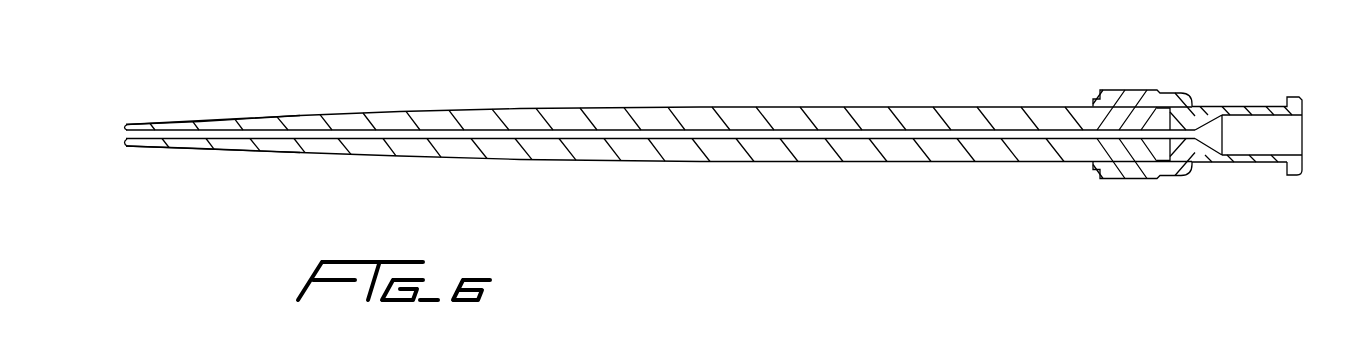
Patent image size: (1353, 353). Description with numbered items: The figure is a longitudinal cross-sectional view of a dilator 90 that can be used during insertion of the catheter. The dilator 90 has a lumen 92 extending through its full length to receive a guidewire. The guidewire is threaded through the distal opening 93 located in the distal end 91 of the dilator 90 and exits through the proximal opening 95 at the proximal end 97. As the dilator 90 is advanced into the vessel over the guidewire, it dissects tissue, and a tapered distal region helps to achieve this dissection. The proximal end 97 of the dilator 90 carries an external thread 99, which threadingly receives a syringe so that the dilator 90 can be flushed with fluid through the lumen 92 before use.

The dilator 90 is at (824, 66).
The distal end 91 is at (181, 90).
The lumen 92 is at (377, 127).
The distal opening 93 is at (128, 131).
The proximal opening 95 is at (1303, 130).
The proximal end 97 is at (1147, 56).
The external thread 99 is at (1293, 176).